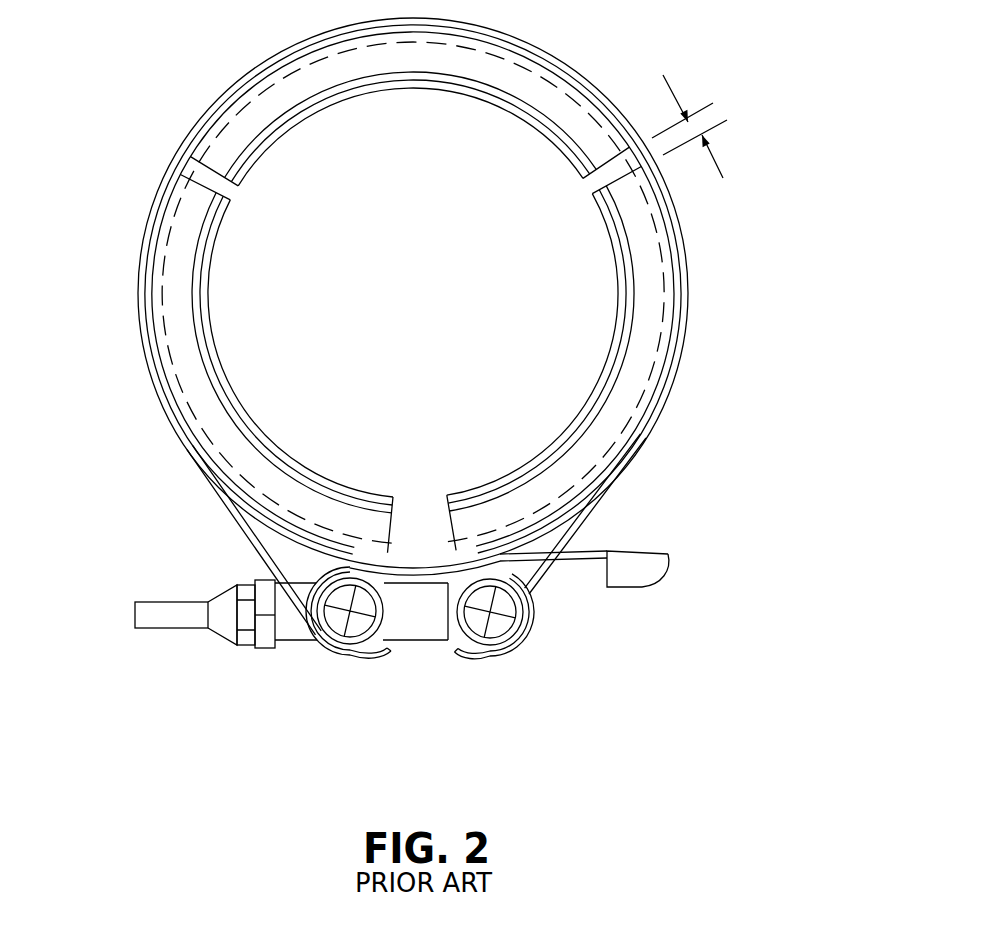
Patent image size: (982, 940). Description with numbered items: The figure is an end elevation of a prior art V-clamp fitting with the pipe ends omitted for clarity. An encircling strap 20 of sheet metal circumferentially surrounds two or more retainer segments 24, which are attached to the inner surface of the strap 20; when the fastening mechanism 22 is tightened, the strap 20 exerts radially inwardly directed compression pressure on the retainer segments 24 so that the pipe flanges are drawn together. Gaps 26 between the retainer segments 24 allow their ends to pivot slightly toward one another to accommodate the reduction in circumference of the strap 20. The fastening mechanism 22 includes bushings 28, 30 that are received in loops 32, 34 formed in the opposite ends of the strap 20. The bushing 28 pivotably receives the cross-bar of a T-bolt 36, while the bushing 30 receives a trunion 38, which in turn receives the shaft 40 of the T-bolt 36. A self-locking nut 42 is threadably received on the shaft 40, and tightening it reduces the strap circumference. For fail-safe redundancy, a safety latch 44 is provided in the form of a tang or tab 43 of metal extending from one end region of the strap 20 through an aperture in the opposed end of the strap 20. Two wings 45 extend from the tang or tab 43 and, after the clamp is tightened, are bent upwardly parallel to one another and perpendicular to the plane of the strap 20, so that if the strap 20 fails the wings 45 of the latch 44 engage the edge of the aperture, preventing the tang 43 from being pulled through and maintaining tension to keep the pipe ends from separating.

The encircling strap 20 is at (153, 383).
The fastening mechanism 22 is at (414, 672).
The retainer segments 24 is at (193, 227).
The gaps 26 is at (716, 125).
The bushing 28 is at (600, 550).
The bushing 30 is at (338, 618).
The loop 32 is at (504, 662).
The loop 34 is at (355, 664).
The T-bolt 36 is at (138, 602).
The trunion 38 is at (262, 649).
The shaft 40 is at (418, 642).
The self-locking nut 42 is at (222, 592).
The tang or tab 43 is at (465, 567).
The safety latch 44 is at (665, 581).
The wings 45 is at (627, 578).